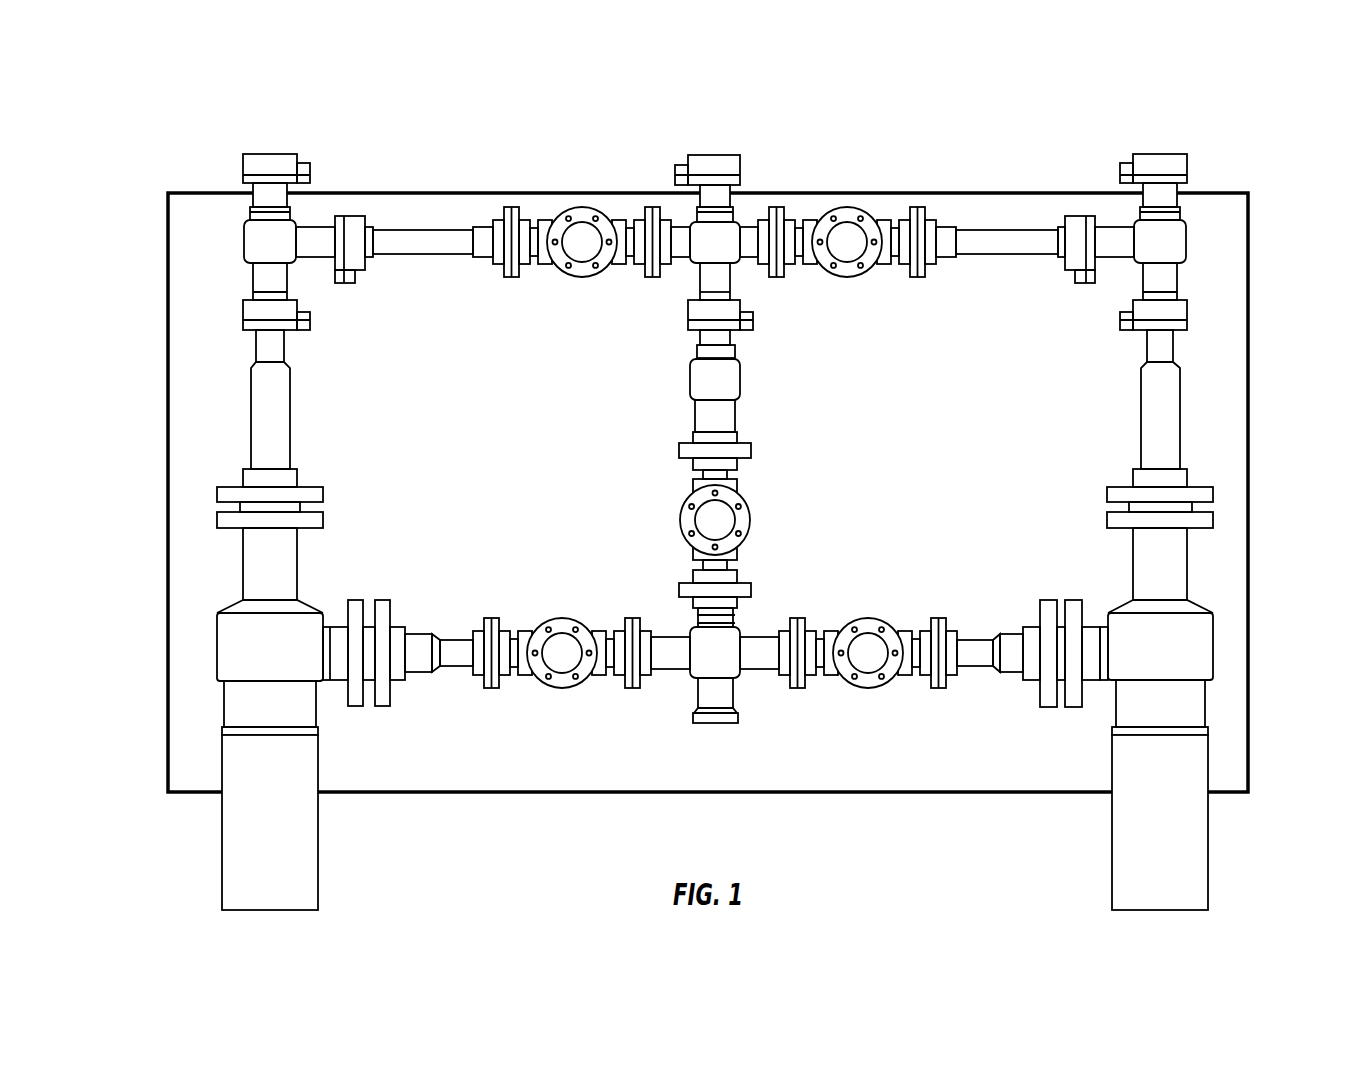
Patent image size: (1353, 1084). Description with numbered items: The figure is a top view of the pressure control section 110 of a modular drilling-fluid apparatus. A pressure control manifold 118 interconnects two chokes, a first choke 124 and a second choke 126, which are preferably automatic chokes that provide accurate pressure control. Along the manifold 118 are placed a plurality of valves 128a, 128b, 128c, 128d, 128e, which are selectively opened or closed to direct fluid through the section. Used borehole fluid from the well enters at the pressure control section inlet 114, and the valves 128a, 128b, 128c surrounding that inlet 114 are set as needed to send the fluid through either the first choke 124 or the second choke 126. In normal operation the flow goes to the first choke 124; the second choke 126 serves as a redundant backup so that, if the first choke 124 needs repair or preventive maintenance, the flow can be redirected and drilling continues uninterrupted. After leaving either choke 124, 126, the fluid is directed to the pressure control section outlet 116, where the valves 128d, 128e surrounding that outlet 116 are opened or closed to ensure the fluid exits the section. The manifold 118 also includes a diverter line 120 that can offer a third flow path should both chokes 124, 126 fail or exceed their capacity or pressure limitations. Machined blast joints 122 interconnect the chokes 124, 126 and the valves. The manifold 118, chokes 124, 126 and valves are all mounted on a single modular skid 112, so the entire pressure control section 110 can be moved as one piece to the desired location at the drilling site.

The pressure control section 110 is at (147, 149).
The modular skid 112 is at (962, 213).
The pressure control section inlet 114 is at (715, 725).
The pressure control section outlet 116 is at (270, 152).
The pressure control manifold 118 is at (738, 627).
The diverter line 120 is at (688, 380).
The machined blast joint 122 is at (248, 418).
The first choke 124 is at (1213, 647).
The second choke 126 is at (215, 647).
The valve 128a is at (868, 690).
The valve 128b is at (680, 520).
The valve 128c is at (562, 690).
The valve 128d is at (581, 278).
The valve 128e is at (848, 278).